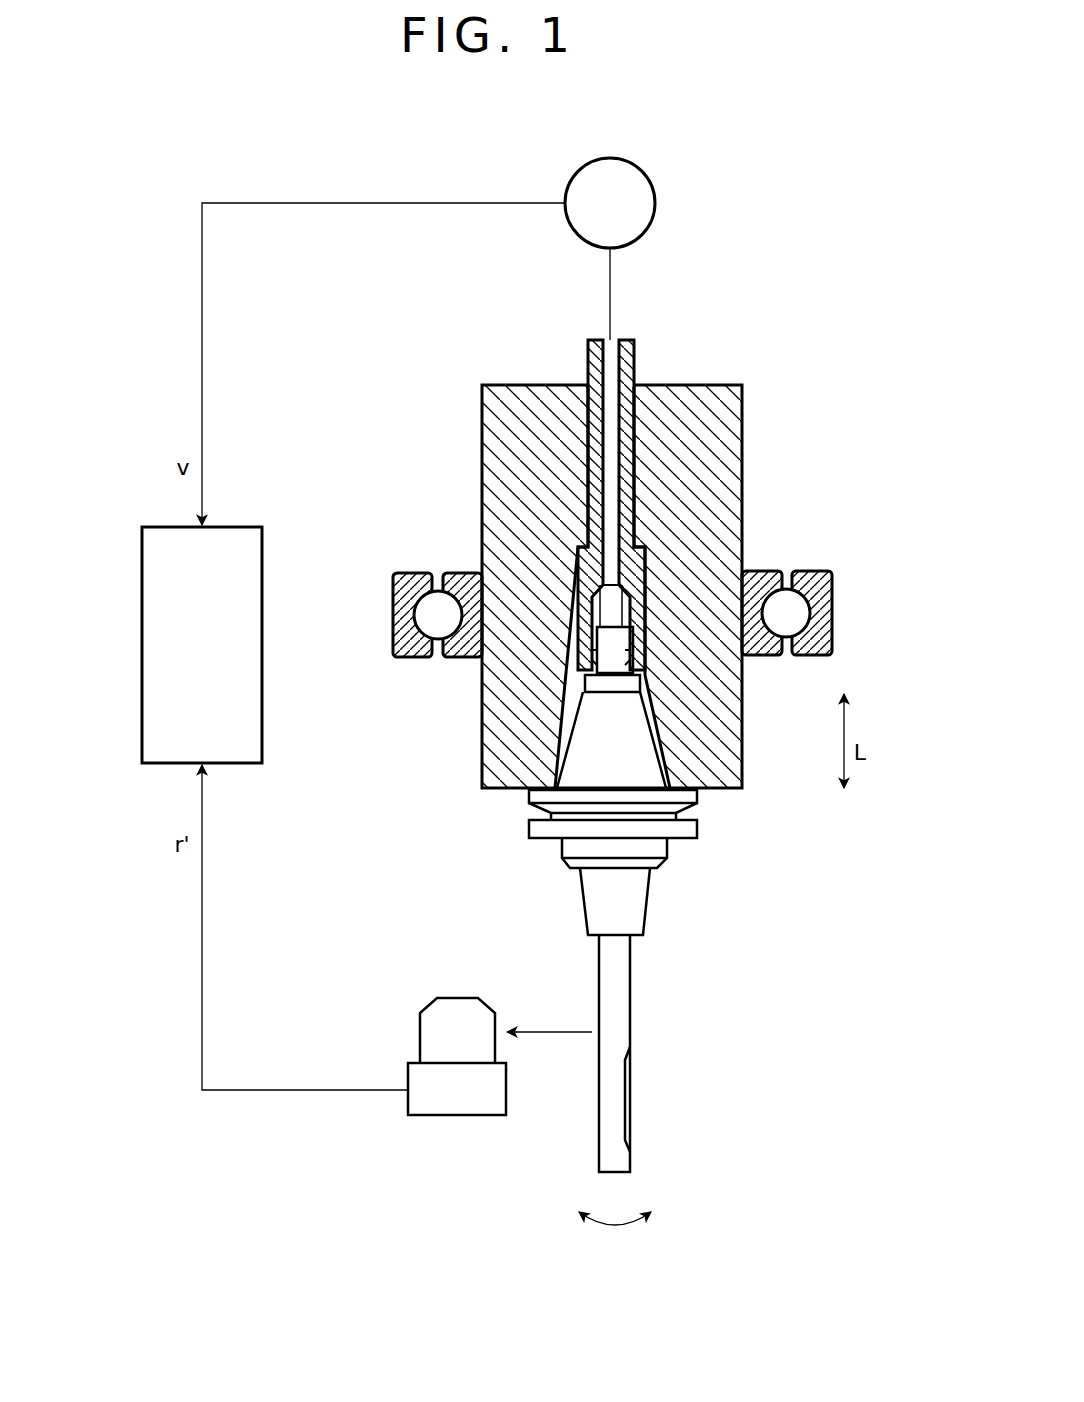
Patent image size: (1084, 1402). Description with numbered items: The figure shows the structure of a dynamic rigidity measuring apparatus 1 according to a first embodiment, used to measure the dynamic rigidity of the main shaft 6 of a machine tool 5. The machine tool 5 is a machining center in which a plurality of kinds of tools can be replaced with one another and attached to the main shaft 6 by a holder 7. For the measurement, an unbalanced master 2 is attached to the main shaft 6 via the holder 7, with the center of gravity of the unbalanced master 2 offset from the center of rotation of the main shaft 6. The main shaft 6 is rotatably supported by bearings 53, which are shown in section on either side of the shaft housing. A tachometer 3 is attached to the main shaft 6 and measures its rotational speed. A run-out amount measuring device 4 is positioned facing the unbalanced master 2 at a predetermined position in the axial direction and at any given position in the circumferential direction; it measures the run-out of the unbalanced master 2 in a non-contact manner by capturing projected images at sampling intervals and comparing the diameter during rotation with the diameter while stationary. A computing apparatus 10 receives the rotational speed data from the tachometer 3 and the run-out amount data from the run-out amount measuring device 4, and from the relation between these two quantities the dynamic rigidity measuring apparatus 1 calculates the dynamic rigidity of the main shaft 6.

The dynamic rigidity measuring apparatus 1 is at (700, 1090).
The unbalanced master 2 is at (620, 1003).
The tachometer 3 is at (628, 185).
The run-out amount measuring device 4 is at (460, 1093).
The machine tool 5 is at (660, 520).
The main shaft 6 is at (703, 457).
The holder 7 is at (633, 848).
The computing apparatus 10 is at (187, 640).
The bearings 53 is at (813, 583).